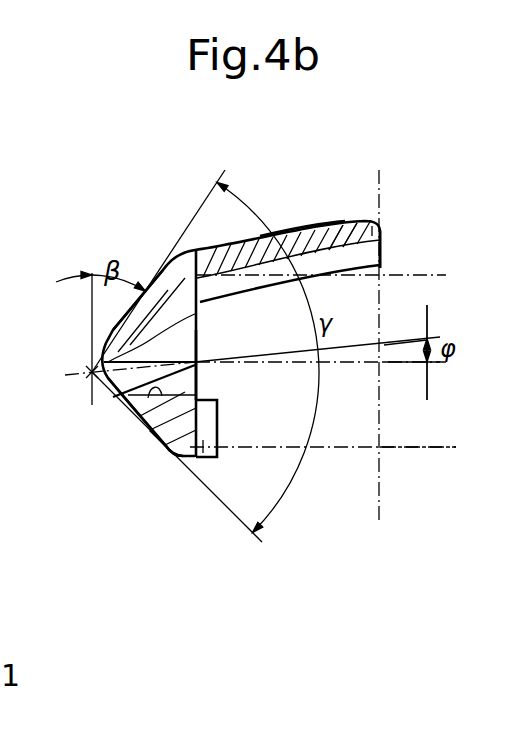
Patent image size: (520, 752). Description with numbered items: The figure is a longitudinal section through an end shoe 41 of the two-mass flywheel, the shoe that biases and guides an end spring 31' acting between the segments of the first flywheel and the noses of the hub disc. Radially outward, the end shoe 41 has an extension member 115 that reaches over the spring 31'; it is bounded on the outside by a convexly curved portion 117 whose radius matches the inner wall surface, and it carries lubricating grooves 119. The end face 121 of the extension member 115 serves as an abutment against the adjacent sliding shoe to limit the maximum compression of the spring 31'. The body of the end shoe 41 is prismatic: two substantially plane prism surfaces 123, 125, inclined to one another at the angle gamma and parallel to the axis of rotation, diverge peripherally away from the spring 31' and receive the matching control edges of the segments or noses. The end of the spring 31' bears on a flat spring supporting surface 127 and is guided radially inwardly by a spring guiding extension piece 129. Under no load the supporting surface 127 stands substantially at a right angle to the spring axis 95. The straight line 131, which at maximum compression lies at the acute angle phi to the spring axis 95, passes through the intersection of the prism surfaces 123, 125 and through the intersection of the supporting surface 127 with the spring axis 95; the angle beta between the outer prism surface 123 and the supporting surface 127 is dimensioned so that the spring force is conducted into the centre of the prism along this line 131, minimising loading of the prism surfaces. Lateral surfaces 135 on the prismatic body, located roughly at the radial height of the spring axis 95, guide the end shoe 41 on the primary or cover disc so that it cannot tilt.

The extension member 115 is at (374, 222).
The curved portion 117 is at (303, 222).
The lubricating grooves 119 is at (346, 226).
The end face 121 is at (382, 232).
The prism surface 123 is at (152, 277).
The prism surface 125 is at (135, 418).
The spring supporting surface 127 is at (197, 378).
The spring guiding extension piece 129 is at (207, 452).
The straight line 131 is at (392, 333).
The lateral surfaces 135 is at (128, 404).
The spring axis 95 is at (392, 375).
The end shoe 41 is at (143, 453).
The end spring 31' is at (435, 479).